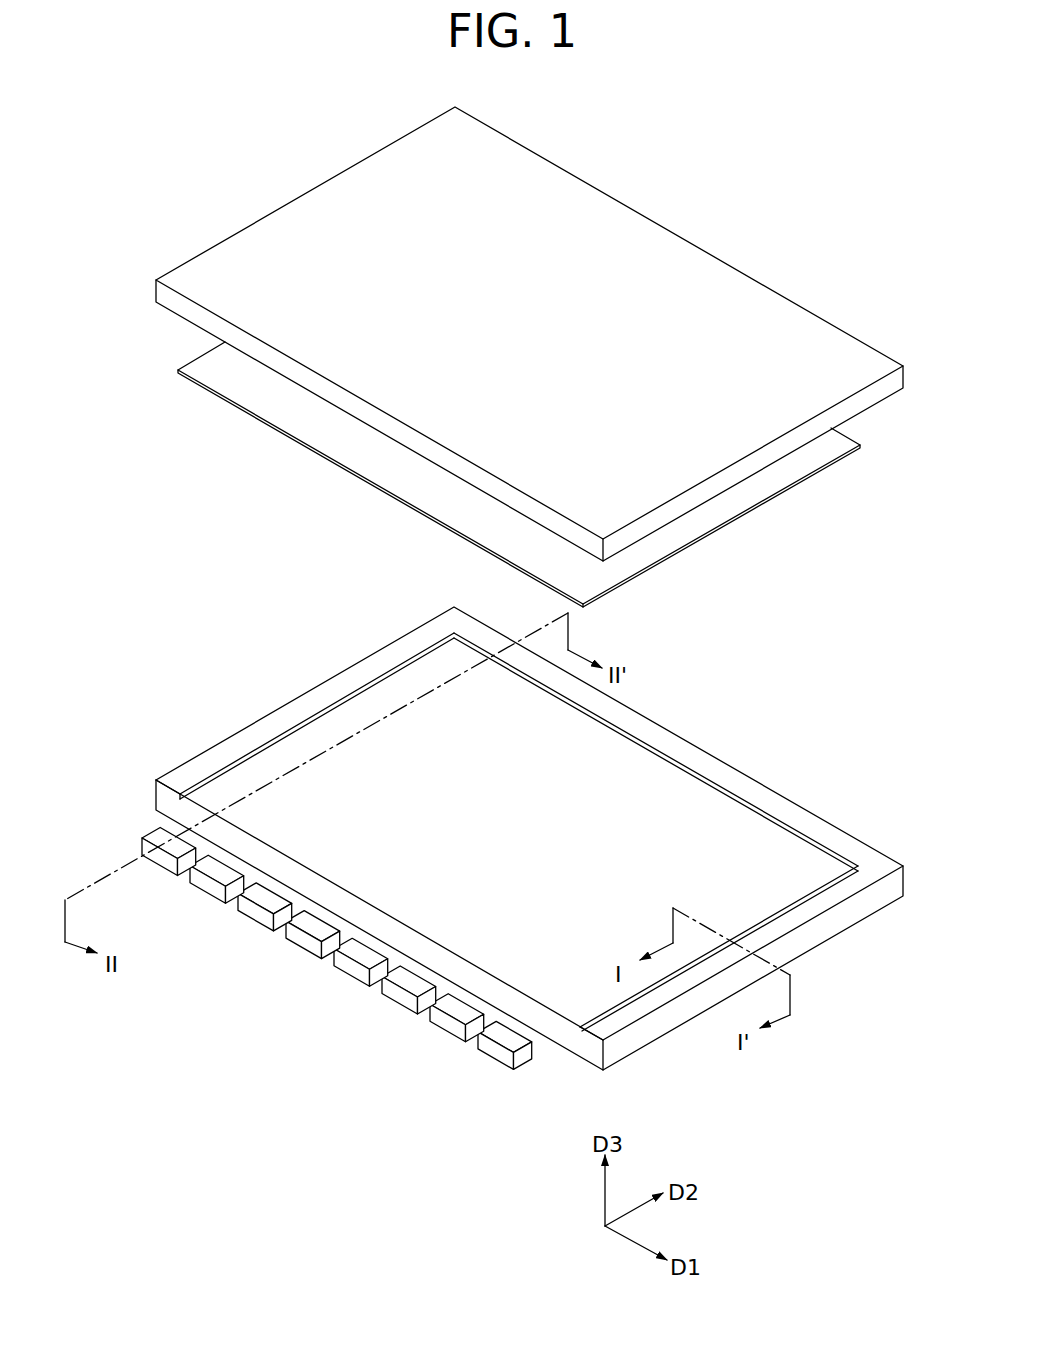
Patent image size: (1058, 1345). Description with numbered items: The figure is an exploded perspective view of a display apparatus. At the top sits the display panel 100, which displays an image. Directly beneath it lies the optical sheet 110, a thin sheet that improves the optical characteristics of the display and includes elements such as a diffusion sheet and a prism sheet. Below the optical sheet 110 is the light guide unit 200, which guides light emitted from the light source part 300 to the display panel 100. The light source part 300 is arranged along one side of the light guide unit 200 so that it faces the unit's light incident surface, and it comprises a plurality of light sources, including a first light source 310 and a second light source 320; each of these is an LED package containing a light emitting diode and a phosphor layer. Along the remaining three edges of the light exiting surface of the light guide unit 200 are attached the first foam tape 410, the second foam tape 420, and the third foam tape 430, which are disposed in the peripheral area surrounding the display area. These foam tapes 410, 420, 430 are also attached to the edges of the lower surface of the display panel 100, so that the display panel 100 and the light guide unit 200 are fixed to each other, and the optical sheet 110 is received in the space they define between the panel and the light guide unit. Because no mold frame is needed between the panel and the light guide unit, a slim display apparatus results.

The display panel 100 is at (778, 307).
The optical sheet 110 is at (792, 467).
The light guide unit 200 is at (545, 838).
The light source part 300 is at (335, 949).
The first light source 310 is at (169, 877).
The second light source 320 is at (205, 878).
The first foam tape 410 is at (727, 777).
The second foam tape 420 is at (330, 690).
The third foam tape 430 is at (885, 865).